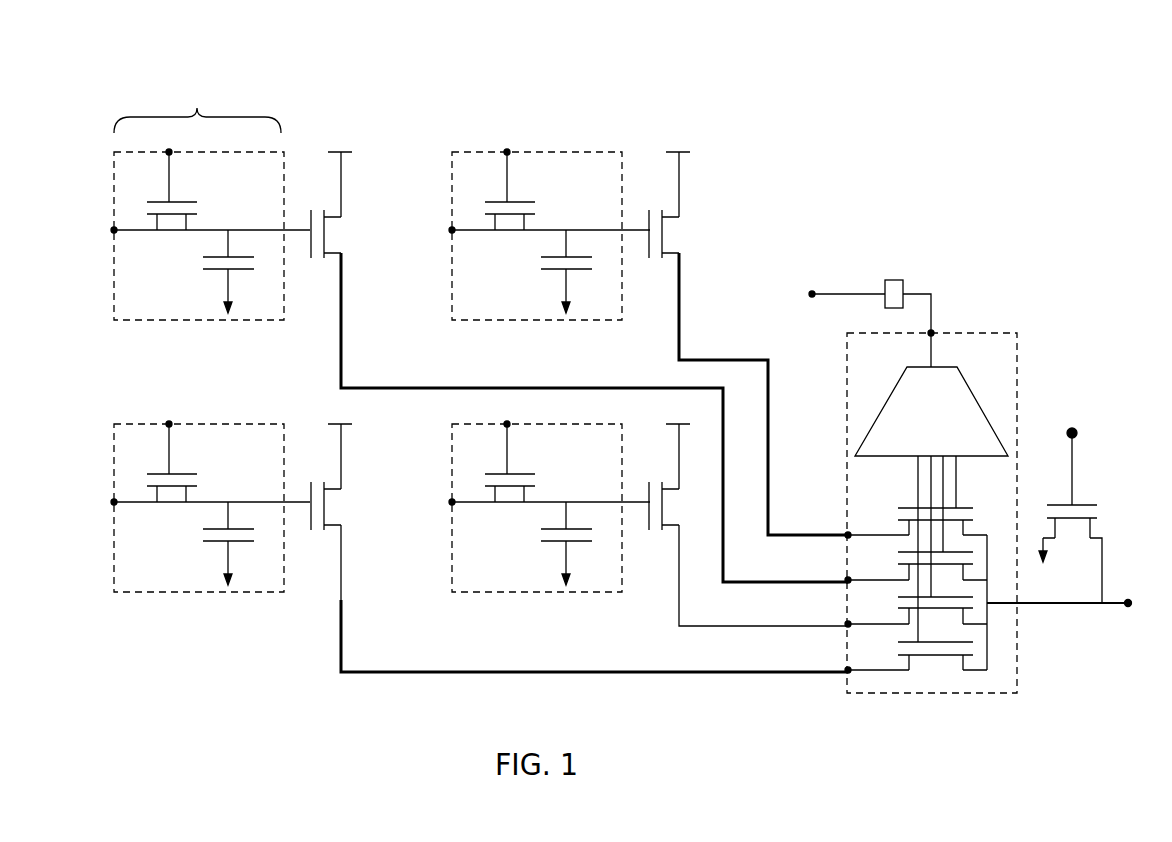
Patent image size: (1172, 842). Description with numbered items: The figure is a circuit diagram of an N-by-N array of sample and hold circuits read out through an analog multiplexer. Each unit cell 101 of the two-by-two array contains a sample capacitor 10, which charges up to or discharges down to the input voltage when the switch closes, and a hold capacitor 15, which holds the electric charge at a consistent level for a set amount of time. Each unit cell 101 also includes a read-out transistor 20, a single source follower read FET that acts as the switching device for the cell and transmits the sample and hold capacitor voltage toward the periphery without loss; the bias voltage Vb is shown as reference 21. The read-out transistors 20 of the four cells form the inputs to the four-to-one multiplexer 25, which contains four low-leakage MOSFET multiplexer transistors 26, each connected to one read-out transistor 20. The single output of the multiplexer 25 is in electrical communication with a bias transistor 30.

The unit cell 101 is at (197, 108).
The hold capacitor 15 is at (157, 227).
The sample capacitor 10 is at (220, 272).
The bias voltage 21 is at (340, 140).
The read-out transistor 20 is at (333, 236).
The analog multiplexer 25 is at (1018, 370).
The multiplexer transistor 26 is at (972, 529).
The bias transistor 30 is at (1100, 533).